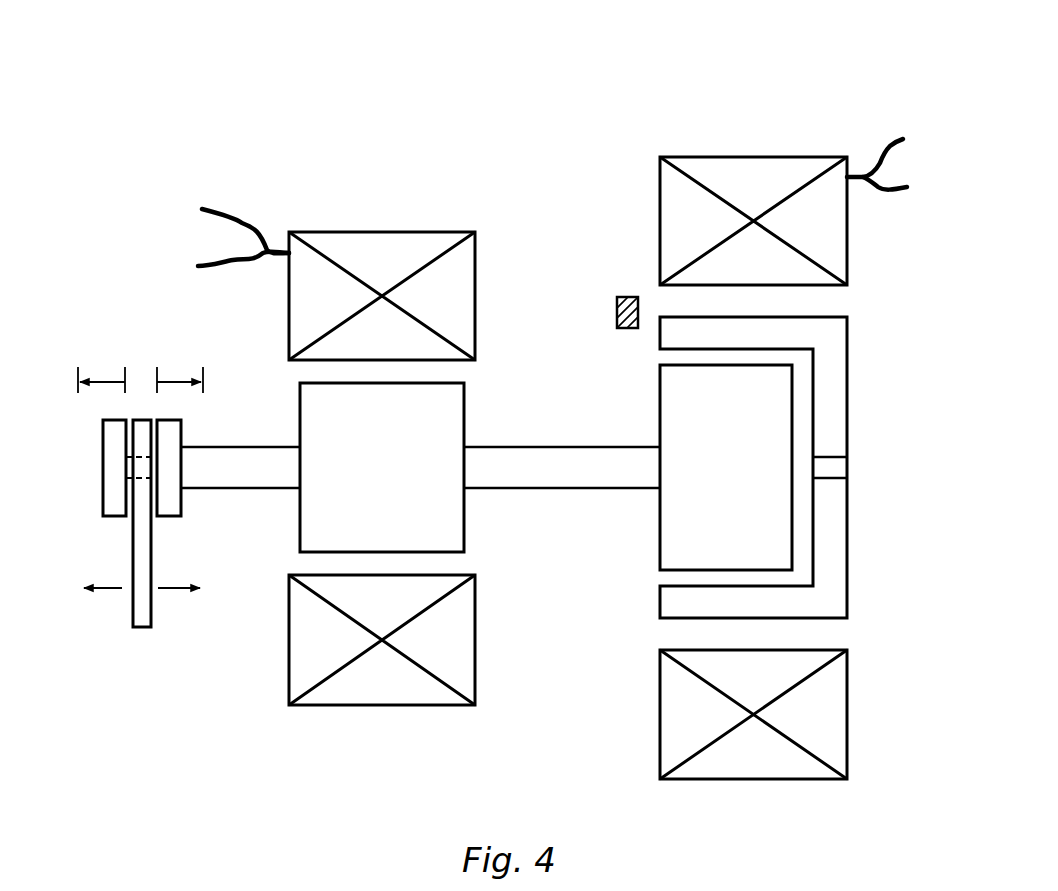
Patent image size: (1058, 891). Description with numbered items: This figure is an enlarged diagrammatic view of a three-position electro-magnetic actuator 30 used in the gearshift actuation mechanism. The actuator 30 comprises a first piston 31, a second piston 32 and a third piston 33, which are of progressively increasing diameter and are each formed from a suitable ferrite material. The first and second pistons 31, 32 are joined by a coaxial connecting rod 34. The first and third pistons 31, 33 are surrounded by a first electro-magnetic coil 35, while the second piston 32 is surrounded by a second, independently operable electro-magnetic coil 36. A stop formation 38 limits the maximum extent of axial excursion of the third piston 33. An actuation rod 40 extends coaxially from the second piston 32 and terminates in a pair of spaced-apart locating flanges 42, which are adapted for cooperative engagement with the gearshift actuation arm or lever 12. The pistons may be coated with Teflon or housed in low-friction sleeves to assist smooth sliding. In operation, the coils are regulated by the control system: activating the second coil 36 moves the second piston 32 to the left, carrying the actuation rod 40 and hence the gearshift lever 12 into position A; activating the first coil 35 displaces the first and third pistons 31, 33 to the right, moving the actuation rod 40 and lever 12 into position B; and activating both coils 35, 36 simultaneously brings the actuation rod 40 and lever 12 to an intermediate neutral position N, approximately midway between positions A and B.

The electro-magnetic actuator 30 is at (391, 127).
The first piston 31 is at (672, 521).
The second piston 32 is at (443, 522).
The third piston 33 is at (837, 550).
The connecting rod 34 is at (553, 467).
The first electro-magnetic coil 35 is at (833, 253).
The second electro-magnetic coil 36 is at (460, 280).
The stop formation 38 is at (615, 312).
The actuation rod 40 is at (240, 478).
The locating flanges 42 is at (106, 494).
The gearshift actuation arm or lever 12 is at (152, 616).